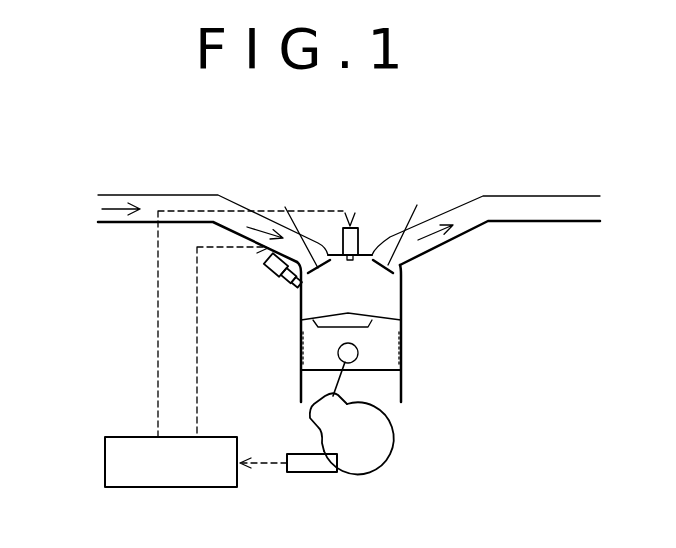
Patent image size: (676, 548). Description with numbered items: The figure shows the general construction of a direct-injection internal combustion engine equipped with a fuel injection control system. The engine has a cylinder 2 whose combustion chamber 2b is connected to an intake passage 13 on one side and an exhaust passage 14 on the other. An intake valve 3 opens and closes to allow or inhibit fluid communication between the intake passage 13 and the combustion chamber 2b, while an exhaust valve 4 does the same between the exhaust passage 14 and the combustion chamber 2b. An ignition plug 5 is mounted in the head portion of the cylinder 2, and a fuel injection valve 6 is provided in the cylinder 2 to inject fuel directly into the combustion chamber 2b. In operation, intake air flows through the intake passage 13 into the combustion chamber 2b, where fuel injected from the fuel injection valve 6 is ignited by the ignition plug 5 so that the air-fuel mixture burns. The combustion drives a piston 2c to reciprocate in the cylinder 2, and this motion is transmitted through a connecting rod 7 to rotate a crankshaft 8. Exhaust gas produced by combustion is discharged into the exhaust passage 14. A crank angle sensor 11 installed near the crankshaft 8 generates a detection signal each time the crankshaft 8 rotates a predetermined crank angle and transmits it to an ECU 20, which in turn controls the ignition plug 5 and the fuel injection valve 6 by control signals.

The cylinder 2 is at (402, 305).
The combustion chamber 2b is at (366, 297).
The piston 2c is at (388, 345).
The intake valve 3 is at (285, 207).
The exhaust valve 4 is at (417, 205).
The ignition plug 5 is at (336, 233).
The fuel injection valve 6 is at (272, 272).
The connecting rod 7 is at (326, 393).
The crankshaft 8 is at (393, 425).
The crank angle sensor 11 is at (310, 472).
The intake passage 13 is at (128, 195).
The exhaust passage 14 is at (513, 196).
The ECU 20 is at (105, 462).